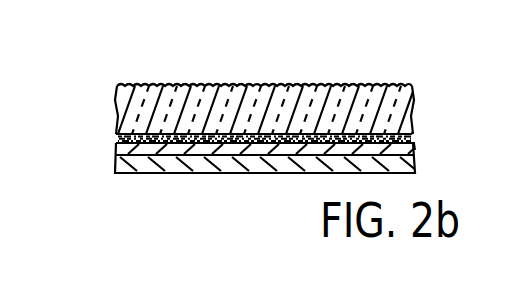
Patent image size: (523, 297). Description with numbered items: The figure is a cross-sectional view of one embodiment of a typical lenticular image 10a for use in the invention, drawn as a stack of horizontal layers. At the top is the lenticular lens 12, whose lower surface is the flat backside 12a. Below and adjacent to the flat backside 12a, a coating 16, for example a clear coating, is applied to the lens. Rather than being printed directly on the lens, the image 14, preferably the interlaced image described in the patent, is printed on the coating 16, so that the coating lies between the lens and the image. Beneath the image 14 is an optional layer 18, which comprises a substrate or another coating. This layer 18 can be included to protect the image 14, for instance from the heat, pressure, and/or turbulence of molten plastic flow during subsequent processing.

The lenticular image 10a is at (132, 209).
The lenticular lens 12 is at (368, 107).
The flat backside 12a is at (413, 146).
The image 14 is at (113, 147).
The coating 16 is at (114, 139).
The layer 18 is at (183, 163).